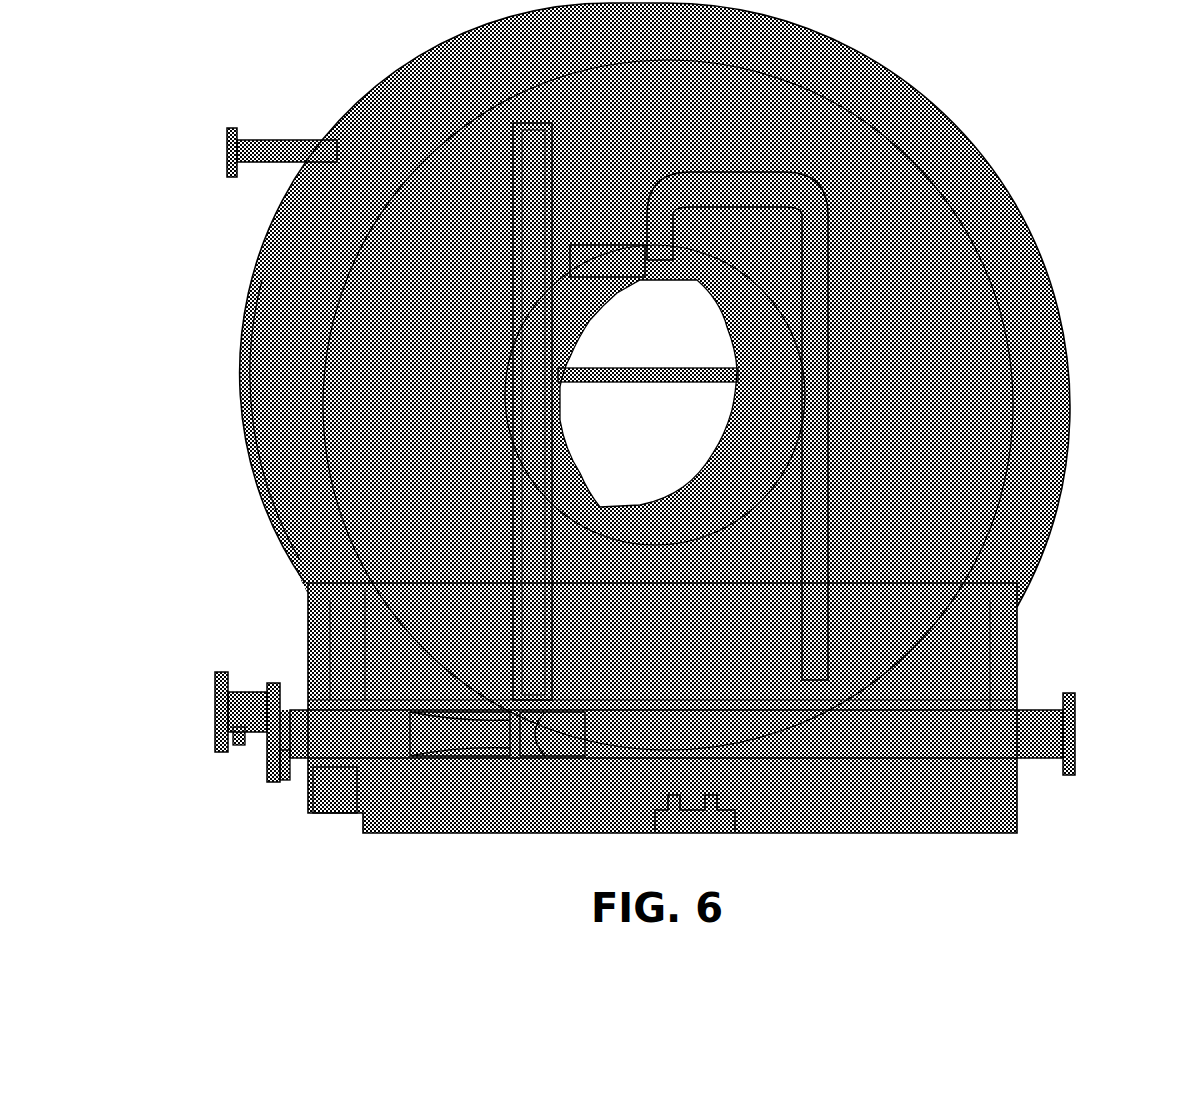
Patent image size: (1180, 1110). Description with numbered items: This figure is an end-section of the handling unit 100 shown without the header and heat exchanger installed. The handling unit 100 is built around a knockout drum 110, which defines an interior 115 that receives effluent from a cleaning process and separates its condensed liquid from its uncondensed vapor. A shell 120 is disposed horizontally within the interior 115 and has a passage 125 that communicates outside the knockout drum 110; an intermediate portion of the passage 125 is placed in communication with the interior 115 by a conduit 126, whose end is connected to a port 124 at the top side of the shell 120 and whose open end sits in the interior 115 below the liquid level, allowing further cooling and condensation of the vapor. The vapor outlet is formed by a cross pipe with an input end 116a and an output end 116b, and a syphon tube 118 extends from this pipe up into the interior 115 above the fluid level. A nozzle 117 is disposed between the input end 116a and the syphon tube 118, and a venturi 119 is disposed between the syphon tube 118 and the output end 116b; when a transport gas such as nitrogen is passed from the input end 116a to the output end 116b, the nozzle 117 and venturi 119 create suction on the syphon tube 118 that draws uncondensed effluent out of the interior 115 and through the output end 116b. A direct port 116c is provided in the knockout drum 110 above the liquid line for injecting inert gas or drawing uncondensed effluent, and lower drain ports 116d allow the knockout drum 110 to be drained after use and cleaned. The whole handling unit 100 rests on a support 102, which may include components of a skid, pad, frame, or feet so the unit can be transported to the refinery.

The handling unit 100 is at (988, 93).
The support 102 is at (408, 840).
The knockout drum 110 is at (1050, 285).
The interior 115 is at (1068, 371).
The input end 116a is at (1080, 704).
The output end 116b is at (265, 765).
The direct port 116c is at (228, 143).
The lower drain port 116d is at (735, 815).
The nozzle 117 is at (548, 760).
The syphon tube 118 is at (520, 252).
The venturi 119 is at (450, 762).
The shell 120 is at (623, 527).
The port 124 is at (650, 238).
The passage 125 is at (715, 527).
The conduit 126 is at (835, 277).